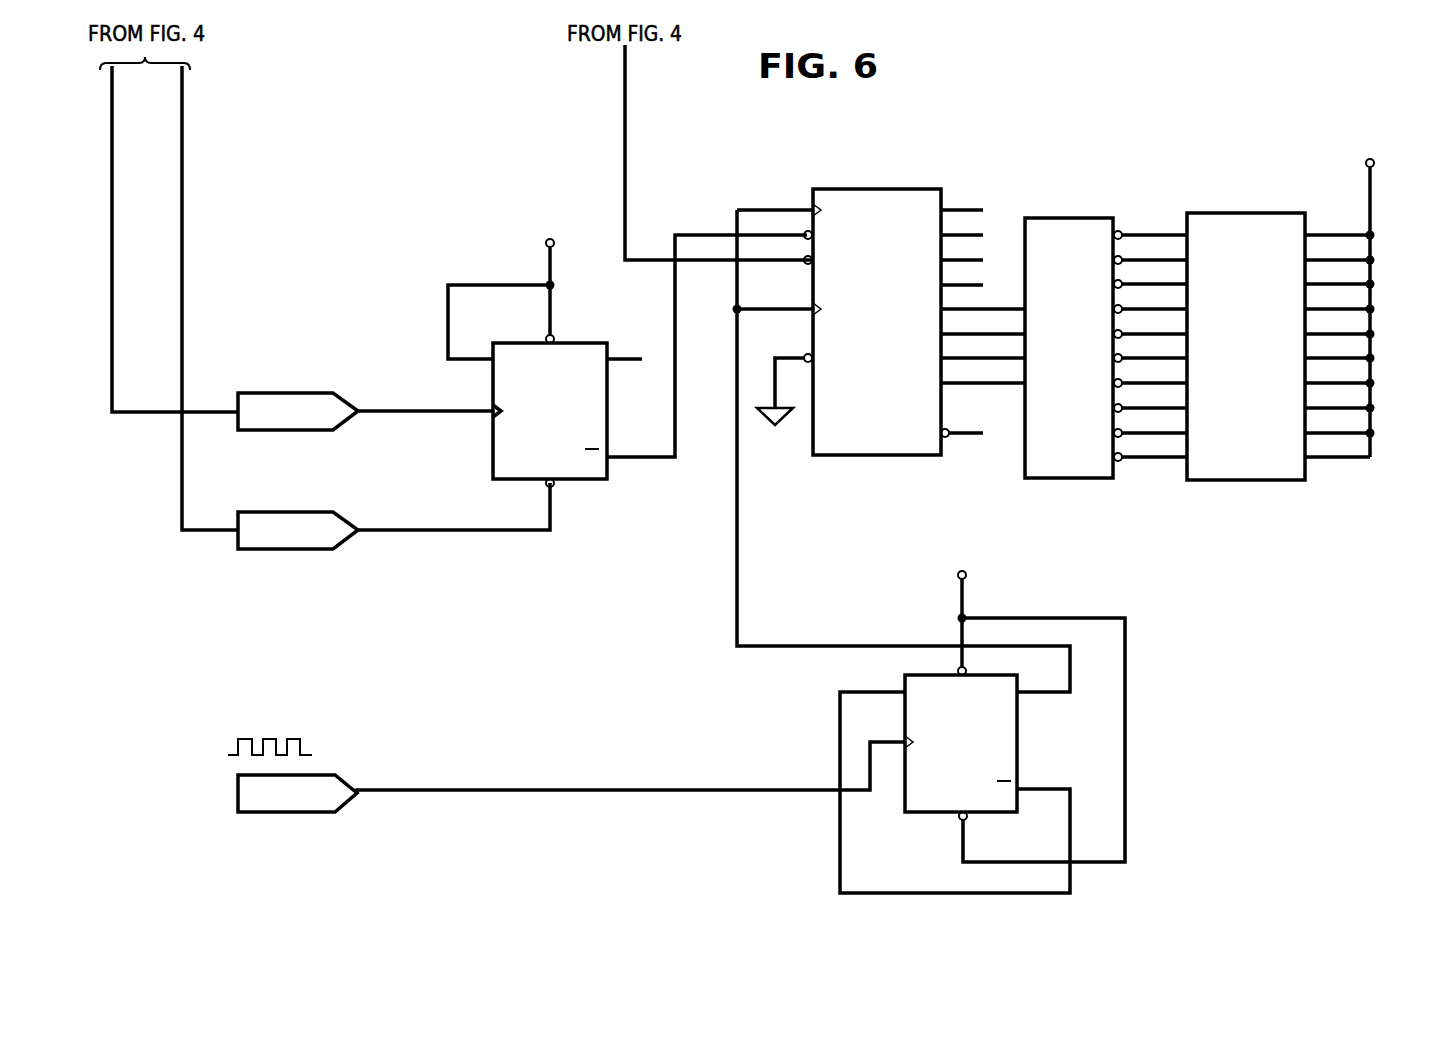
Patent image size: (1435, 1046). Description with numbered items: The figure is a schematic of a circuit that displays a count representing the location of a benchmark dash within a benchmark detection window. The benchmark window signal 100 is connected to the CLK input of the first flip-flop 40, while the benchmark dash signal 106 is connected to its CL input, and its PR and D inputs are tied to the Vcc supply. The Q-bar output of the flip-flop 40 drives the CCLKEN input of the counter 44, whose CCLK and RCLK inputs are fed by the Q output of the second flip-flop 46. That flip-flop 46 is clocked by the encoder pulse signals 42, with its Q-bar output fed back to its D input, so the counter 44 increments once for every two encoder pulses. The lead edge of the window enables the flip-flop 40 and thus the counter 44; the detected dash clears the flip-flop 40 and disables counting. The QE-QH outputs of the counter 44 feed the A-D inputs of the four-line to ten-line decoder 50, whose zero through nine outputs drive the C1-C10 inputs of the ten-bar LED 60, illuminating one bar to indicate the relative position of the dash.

The flip-flop 40 is at (573, 343).
The encoder pulse signals 42 is at (290, 812).
The counter 44 is at (905, 189).
The flip-flop 46 is at (1017, 740).
The decoder 50 is at (1075, 218).
The 10-bar LED 60 is at (1240, 213).
The benchmark window signal 100 is at (305, 393).
The benchmark dash signal 106 is at (312, 512).